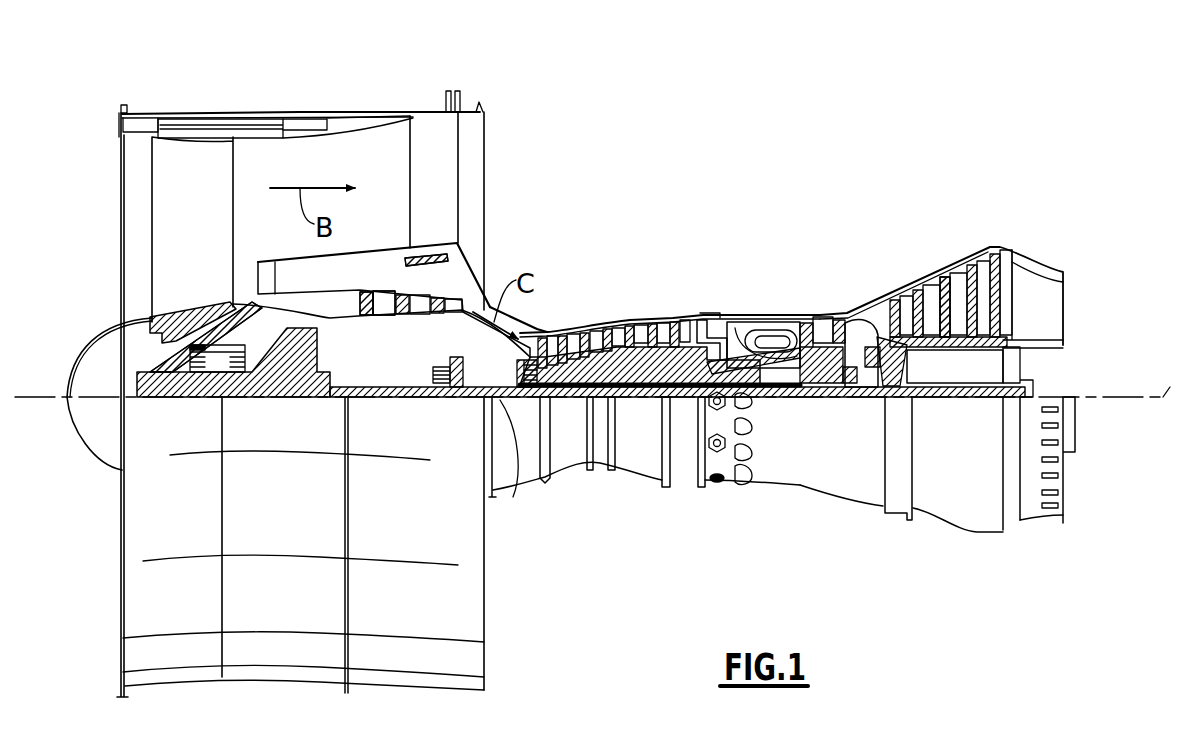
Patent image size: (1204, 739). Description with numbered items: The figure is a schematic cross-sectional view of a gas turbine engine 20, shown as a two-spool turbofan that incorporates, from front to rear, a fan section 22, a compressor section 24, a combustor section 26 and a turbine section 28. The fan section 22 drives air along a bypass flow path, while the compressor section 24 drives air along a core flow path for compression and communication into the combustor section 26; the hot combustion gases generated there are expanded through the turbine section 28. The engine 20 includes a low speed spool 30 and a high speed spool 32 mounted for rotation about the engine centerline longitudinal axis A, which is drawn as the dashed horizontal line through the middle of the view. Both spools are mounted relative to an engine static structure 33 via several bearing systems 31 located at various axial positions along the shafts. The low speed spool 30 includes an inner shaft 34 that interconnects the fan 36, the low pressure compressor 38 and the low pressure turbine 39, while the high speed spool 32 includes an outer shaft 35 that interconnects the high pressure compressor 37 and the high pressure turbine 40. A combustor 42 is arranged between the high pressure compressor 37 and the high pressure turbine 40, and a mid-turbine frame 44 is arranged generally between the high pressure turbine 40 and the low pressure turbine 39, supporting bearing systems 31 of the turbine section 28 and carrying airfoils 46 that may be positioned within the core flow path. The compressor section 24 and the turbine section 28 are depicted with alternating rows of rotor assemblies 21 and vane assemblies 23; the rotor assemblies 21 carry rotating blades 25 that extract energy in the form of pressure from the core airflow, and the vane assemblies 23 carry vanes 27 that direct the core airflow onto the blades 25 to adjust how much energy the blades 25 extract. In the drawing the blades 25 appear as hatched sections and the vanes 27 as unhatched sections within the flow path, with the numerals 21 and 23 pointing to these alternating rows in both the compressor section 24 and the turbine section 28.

The gas turbine engine 20 is at (768, 160).
The rotor blades 21 is at (369, 297).
The fan section 22 is at (236, 102).
The vanes 23 is at (386, 297).
The compressor section 24 is at (534, 303).
The rotating blades 25 is at (413, 355).
The combustor section 26 is at (755, 294).
The vanes 27 is at (450, 317).
The turbine section 28 is at (906, 254).
The low speed spool 30 is at (642, 404).
The bearing systems 31 is at (220, 363).
The high speed spool 32 is at (686, 337).
The engine static structure 33 is at (682, 490).
The inner shaft 34 is at (513, 497).
The outer shaft 35 is at (758, 380).
The fan 36 is at (209, 241).
The high pressure compressor 37 is at (617, 356).
The low pressure compressor 38 is at (458, 250).
The low pressure turbine 39 is at (945, 283).
The high pressure turbine 40 is at (823, 313).
The combustor 42 is at (752, 340).
The mid-turbine frame 44 is at (868, 301).
The airfoils 46 is at (882, 332).
The engine centerline longitudinal axis A is at (1178, 378).